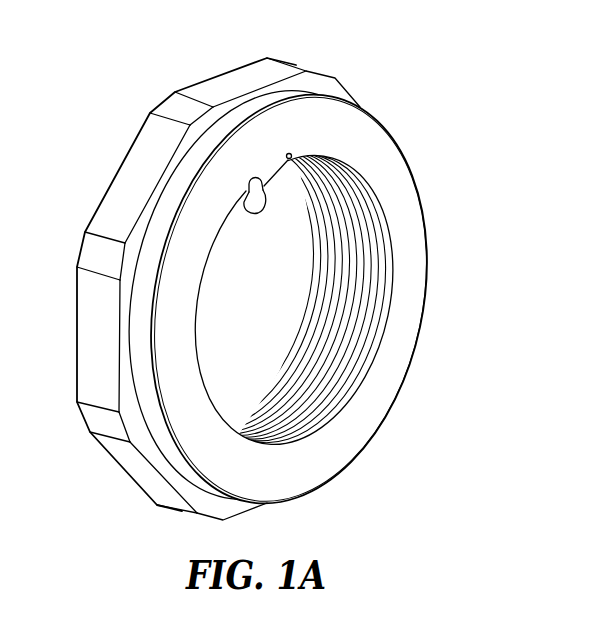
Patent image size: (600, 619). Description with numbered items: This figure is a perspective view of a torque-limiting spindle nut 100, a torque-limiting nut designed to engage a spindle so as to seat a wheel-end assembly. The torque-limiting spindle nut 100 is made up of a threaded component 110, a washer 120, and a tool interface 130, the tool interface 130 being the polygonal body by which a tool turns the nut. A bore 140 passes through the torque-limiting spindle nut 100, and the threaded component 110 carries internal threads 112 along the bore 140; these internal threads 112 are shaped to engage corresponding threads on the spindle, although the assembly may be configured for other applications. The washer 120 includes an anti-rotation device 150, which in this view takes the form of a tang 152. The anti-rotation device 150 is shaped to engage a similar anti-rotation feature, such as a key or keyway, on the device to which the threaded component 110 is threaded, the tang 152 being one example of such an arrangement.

The torque-limiting spindle nut 100 is at (289, 267).
The threaded component 110 is at (308, 262).
The internal threads 112 is at (371, 333).
The washer 120 is at (421, 285).
The tool interface 130 is at (257, 68).
The bore 140 is at (270, 351).
The anti-rotation device 150 is at (275, 168).
The tang 152 is at (245, 200).